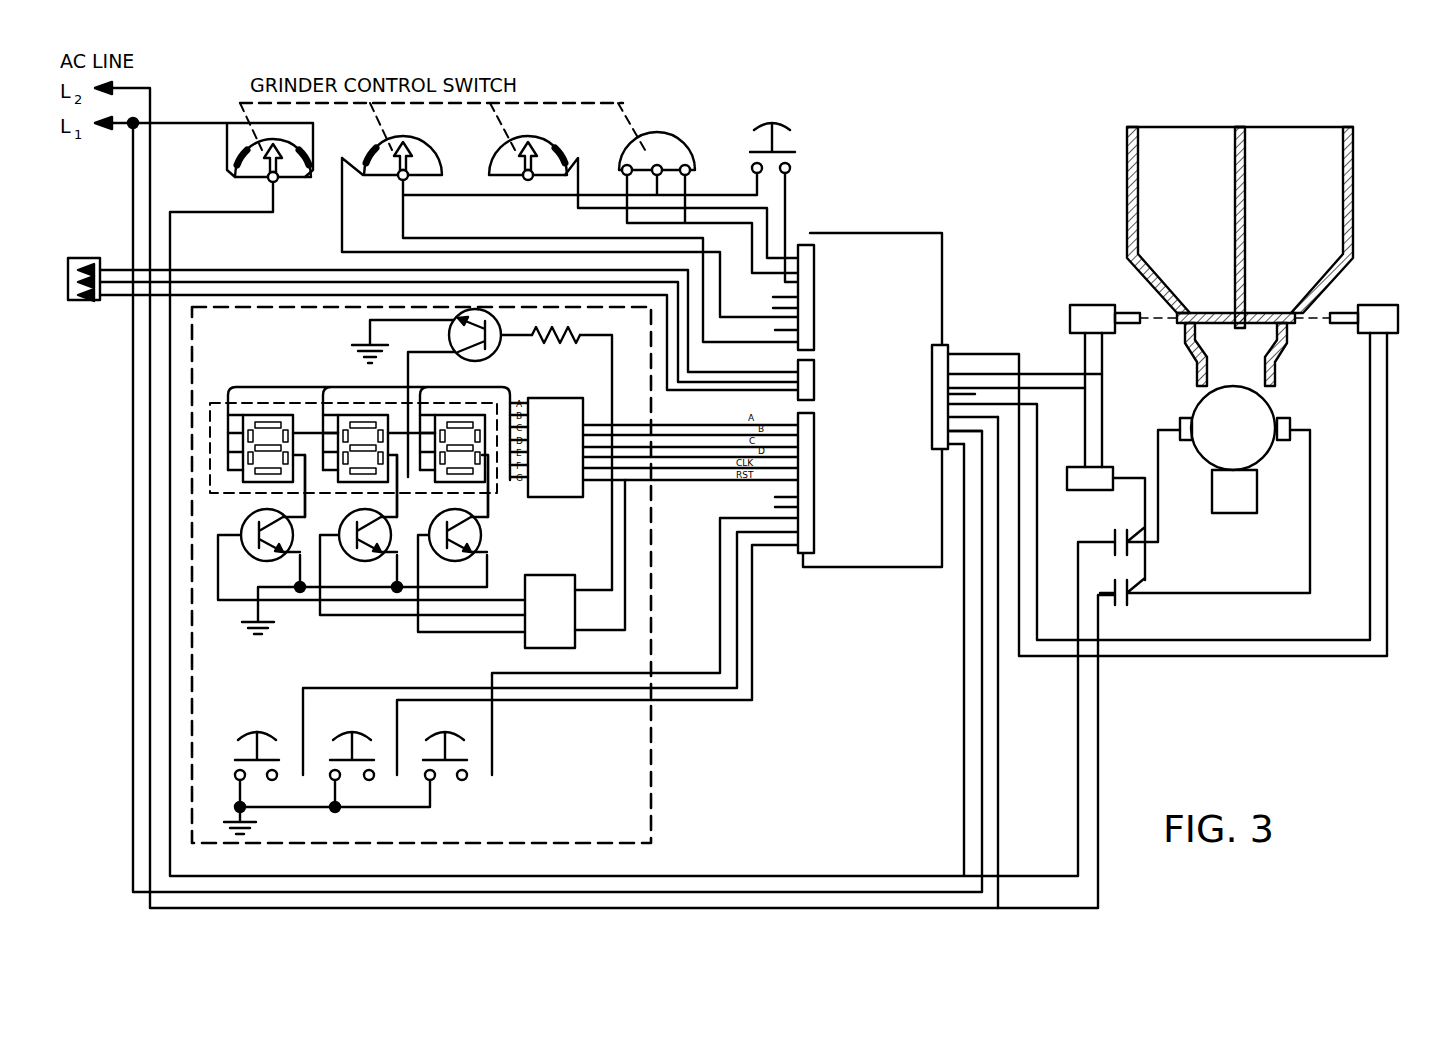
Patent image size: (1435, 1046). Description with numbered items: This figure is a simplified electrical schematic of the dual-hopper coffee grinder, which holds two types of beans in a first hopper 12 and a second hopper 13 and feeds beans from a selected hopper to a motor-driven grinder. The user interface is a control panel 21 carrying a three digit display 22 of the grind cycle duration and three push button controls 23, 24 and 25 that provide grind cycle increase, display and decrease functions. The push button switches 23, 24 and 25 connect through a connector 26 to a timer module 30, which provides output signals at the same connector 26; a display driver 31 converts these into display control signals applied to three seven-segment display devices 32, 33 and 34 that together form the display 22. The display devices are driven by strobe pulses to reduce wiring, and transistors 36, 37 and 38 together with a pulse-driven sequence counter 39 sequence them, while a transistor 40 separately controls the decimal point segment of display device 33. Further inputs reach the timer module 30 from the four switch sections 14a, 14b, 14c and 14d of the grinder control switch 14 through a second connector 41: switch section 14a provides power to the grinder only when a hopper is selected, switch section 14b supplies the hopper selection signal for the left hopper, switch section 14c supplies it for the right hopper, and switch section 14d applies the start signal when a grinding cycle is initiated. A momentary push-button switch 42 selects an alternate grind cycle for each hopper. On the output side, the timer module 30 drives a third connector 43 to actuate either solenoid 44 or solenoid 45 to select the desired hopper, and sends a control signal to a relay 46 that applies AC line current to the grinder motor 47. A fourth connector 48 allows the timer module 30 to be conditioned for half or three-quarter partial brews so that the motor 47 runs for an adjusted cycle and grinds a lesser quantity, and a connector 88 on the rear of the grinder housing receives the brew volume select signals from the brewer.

The first hopper 12 is at (1143, 225).
The second hopper 13 is at (1318, 230).
The grinder control switch 14 is at (623, 103).
The switch section 14a is at (287, 184).
The switch section 14b is at (423, 150).
The switch section 14c is at (543, 150).
The switch section 14d is at (667, 145).
The control panel 21 is at (652, 735).
The three digit display 22 is at (214, 403).
The push button control 23 is at (240, 736).
The push button control 24 is at (338, 736).
The push button control 25 is at (428, 736).
The connector 26 is at (816, 502).
The timer module 30 is at (882, 567).
The display driver 31 is at (548, 497).
The seven-segment display device 32 is at (262, 412).
The seven-segment display device 33 is at (362, 412).
The seven-segment display device 34 is at (478, 398).
The transistor 36 is at (241, 526).
The transistor 37 is at (342, 522).
The transistor 38 is at (433, 522).
The pulse-driven sequence counter 39 is at (533, 575).
The transistor 40 is at (503, 343).
The second connector 41 is at (816, 262).
The push-button switch 42 is at (781, 135).
The third connector 43 is at (930, 415).
The solenoid 44 is at (1070, 308).
The solenoid 45 is at (1362, 325).
The relay 46 is at (1102, 467).
The grinder motor 47 is at (1196, 402).
The fourth connector 48 is at (816, 368).
The connector 88 is at (83, 258).